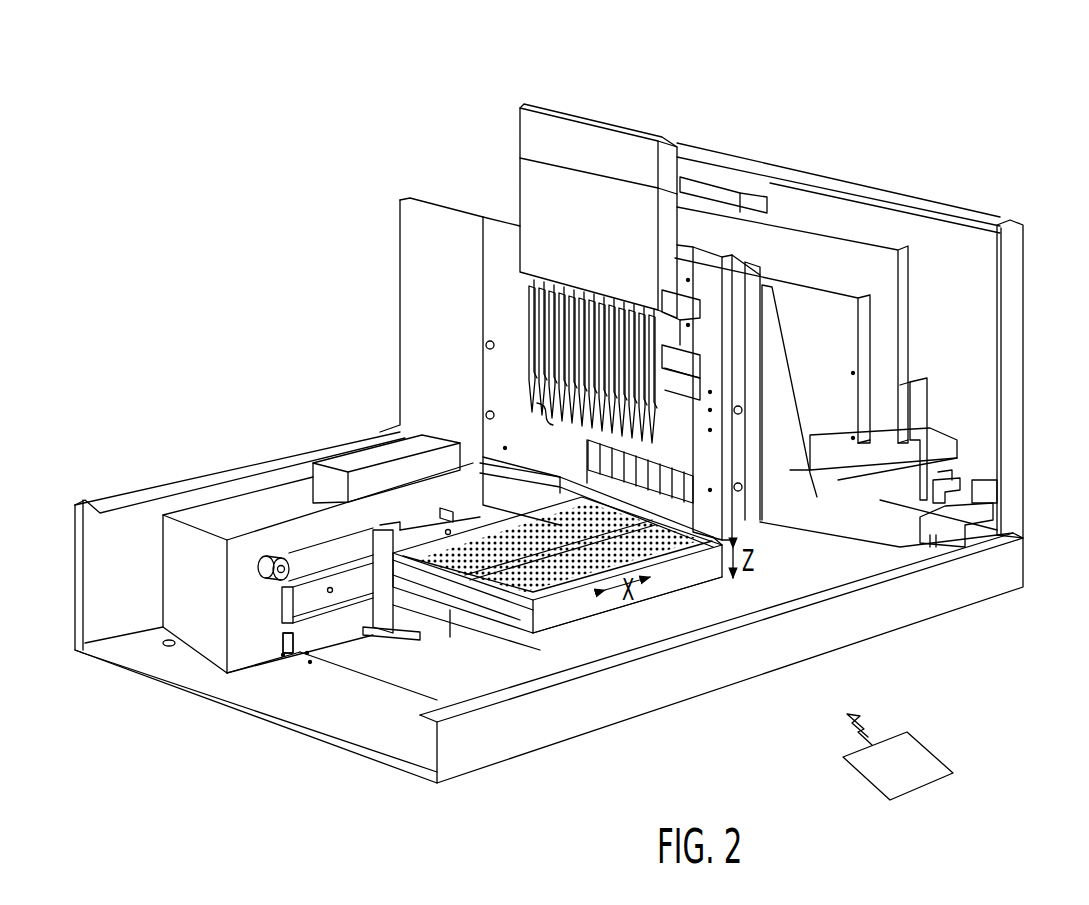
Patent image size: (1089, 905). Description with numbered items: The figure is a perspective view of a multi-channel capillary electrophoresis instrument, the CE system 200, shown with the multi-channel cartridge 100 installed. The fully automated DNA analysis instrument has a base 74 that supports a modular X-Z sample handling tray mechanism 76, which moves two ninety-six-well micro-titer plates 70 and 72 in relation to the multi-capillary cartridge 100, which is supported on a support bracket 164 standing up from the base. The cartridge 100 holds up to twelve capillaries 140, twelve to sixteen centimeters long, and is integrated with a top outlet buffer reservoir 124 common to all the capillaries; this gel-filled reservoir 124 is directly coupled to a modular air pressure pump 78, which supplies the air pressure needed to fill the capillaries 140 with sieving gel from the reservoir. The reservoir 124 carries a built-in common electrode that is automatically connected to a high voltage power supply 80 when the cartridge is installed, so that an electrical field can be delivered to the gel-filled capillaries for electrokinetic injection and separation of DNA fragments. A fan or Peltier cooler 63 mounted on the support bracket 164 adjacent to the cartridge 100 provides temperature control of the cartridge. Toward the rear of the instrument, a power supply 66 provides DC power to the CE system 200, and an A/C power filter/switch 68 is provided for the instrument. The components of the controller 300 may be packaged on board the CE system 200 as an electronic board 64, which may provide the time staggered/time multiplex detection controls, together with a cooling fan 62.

The CE system 200 is at (155, 246).
The multi-channel cartridge 100 is at (550, 276).
The outlet buffer reservoir 124 is at (598, 121).
The cooling fan 62 is at (838, 154).
The fan or Peltier cooler 63 is at (739, 378).
The electronic board 64 is at (849, 331).
The power supply 66 is at (987, 437).
The A/C power filter/switch 68 is at (998, 504).
The support bracket 164 is at (433, 361).
The high voltage power supply 80 is at (386, 423).
The air pressure pump 78 is at (318, 535).
The capillaries 140 is at (596, 475).
The X-Z sample handling tray mechanism 76 is at (256, 610).
The base 74 is at (721, 676).
The 96-well micro-titer plate 72 is at (557, 644).
The 96-well micro-titer plate 70 is at (550, 636).
The controller 300 is at (898, 757).